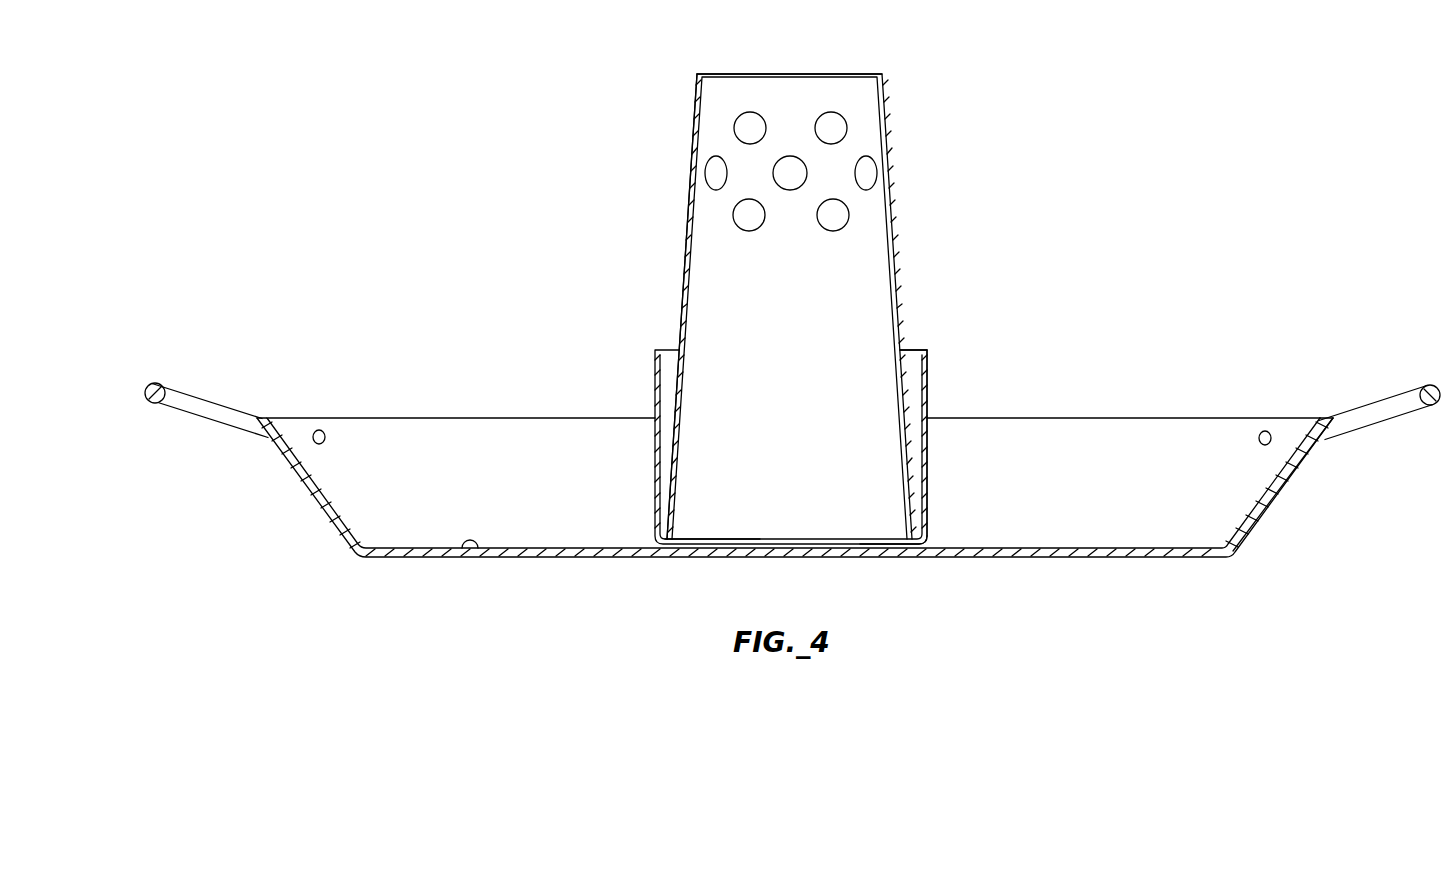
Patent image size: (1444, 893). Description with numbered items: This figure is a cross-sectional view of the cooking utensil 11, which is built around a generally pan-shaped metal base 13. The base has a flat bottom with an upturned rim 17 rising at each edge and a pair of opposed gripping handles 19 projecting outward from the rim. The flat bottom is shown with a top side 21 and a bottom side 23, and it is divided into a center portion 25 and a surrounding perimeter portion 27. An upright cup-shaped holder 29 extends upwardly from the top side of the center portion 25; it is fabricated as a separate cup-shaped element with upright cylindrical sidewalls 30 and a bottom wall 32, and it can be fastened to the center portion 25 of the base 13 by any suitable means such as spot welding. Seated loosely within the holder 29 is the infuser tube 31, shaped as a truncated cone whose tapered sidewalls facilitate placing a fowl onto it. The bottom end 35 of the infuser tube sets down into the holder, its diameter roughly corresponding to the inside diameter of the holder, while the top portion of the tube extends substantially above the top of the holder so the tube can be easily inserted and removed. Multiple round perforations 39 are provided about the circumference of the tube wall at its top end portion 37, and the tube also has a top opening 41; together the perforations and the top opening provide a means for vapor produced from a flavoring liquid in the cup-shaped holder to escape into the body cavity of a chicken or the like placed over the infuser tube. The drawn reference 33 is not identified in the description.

The cooking utensil 11 is at (270, 482).
The pan-shaped metal base 13 is at (365, 562).
The upturned rim 17 is at (1280, 483).
The gripping handles 19 is at (205, 395).
The top side 21 is at (462, 548).
The bottom side 23 is at (585, 558).
The center portion 25 is at (853, 558).
The perimeter portion 27 is at (1068, 558).
The cup-shaped holder 29 is at (927, 390).
The cylindrical sidewalls 30 is at (655, 375).
The infuser tube 31 is at (898, 212).
The bottom wall 32 is at (715, 539).
The collar top edge 33 is at (910, 352).
The bottom end 35 is at (885, 543).
The top end portion 37 is at (695, 180).
The round perforations 39 is at (837, 129).
The top opening 41 is at (812, 74).